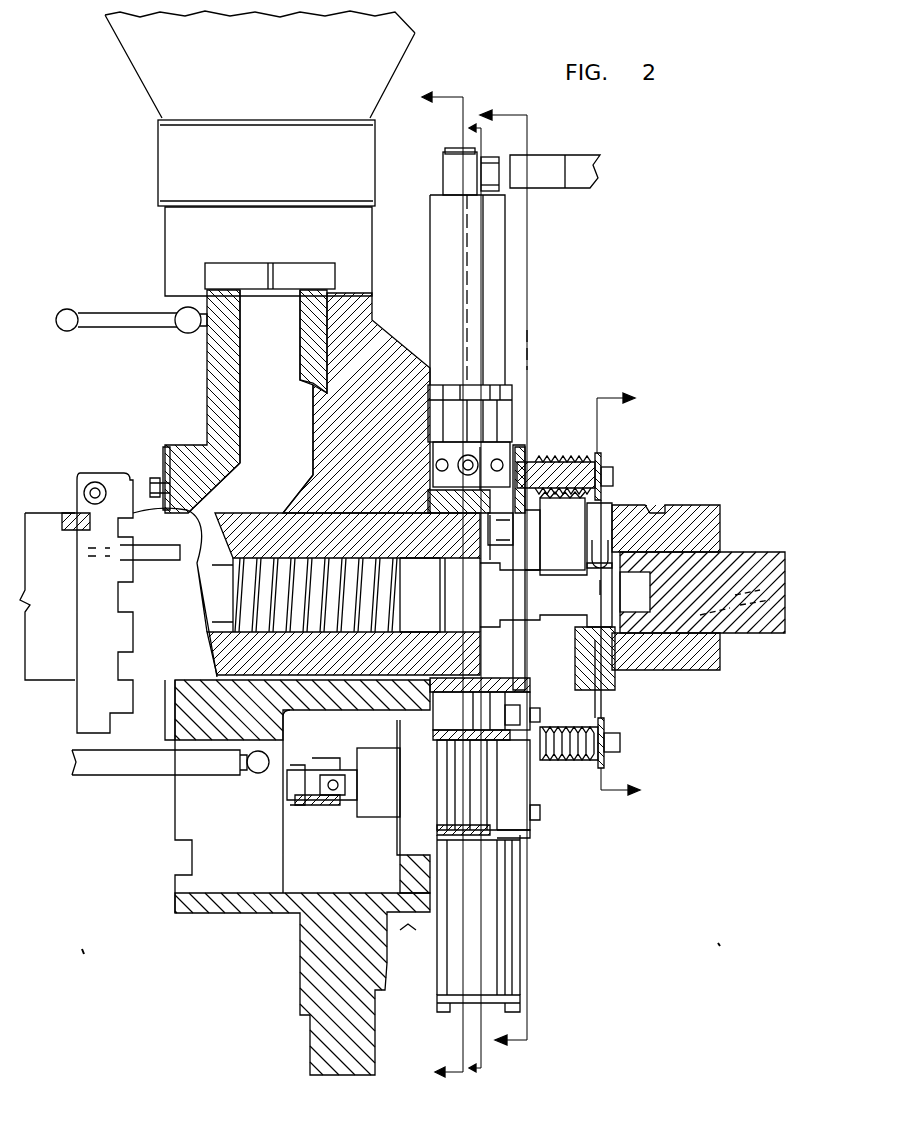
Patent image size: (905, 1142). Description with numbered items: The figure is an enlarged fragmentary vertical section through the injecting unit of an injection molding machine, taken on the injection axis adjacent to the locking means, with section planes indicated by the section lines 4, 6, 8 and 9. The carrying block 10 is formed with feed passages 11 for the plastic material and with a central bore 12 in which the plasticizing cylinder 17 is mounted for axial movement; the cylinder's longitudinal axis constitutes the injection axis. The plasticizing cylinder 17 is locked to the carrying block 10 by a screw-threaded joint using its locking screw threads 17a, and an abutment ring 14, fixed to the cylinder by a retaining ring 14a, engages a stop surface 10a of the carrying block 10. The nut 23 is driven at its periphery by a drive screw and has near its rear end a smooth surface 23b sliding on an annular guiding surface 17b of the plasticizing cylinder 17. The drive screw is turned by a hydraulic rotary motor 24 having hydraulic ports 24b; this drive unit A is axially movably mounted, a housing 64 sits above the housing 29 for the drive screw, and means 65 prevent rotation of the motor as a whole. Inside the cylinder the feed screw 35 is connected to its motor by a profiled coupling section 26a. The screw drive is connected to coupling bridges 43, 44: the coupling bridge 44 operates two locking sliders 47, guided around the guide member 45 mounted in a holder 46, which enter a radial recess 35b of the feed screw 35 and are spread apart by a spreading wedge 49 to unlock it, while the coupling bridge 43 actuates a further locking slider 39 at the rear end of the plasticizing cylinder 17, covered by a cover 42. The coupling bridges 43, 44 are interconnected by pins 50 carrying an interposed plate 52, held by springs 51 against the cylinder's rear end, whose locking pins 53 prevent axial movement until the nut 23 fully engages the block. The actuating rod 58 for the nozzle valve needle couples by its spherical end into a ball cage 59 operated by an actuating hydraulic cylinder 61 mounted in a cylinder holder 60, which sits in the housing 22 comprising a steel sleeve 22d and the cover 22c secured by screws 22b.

The section line 4 is at (453, 585).
The section line 6 is at (487, 596).
The section line 8 is at (512, 580).
The section line 9 is at (615, 597).
The carrying block 10 is at (222, 368).
The stop surface 10a is at (163, 470).
The feed passages 11 is at (283, 423).
The central bore 12 is at (212, 675).
The abutment ring 14 is at (108, 488).
The retaining ring 14a is at (78, 507).
The plasticizing cylinder 17 is at (52, 668).
The locking screw threads 17a is at (392, 690).
The annular guiding surface 17b is at (480, 535).
The housing 22 is at (490, 903).
The screws 22b is at (450, 908).
The cover 22c is at (505, 1000).
The steel sleeve 22d is at (492, 960).
The nut 23 is at (481, 716).
The smooth surface 23b is at (505, 693).
The hydraulic rotary motor 24 is at (505, 280).
The hydraulic ports 24b is at (552, 178).
The profiled coupling section 26a is at (757, 568).
The housing 29 is at (505, 462).
The feed screw 35 is at (226, 606).
The radial recess 35b is at (655, 515).
The locking slider 39 is at (478, 596).
The cover 42 is at (505, 543).
The coupling bridge 43 is at (603, 698).
The coupling bridge 44 is at (603, 466).
The guide member 45 is at (613, 650).
The holder 46 is at (712, 520).
The locking sliders 47 is at (582, 622).
The spreading wedge 49 is at (615, 530).
The pins 50 is at (615, 478).
The springs 51 is at (580, 460).
The interposed plate 52 is at (530, 545).
The locking pins 53 is at (522, 714).
The actuating rod 58 is at (140, 765).
The ball cage 59 is at (312, 808).
The cylinder holder 60 is at (515, 835).
The actuating hydraulic cylinder 61 is at (525, 775).
The housing 64 is at (482, 447).
The means for preventing rotation 65 is at (535, 357).
The drive unit A is at (510, 308).